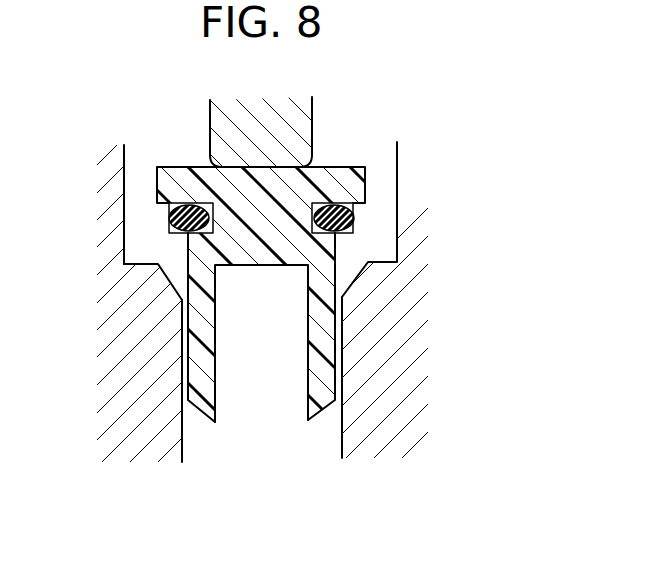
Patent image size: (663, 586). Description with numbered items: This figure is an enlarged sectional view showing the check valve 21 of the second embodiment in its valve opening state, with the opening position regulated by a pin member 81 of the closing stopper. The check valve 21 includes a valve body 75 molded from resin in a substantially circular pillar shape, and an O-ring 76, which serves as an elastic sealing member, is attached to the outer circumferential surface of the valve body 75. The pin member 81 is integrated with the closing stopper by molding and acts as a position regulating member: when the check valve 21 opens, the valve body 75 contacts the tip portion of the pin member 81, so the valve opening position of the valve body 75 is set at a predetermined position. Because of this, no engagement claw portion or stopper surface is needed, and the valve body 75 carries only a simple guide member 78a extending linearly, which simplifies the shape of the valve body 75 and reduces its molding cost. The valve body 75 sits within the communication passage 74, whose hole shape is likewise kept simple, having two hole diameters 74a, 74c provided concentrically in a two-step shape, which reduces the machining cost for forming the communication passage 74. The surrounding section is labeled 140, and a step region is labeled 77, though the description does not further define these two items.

The check valve 21 is at (304, 303).
The communication passage 74 is at (257, 412).
The hole diameter 74a is at (342, 413).
The hole diameter 74c is at (400, 218).
The valve body 75 is at (157, 192).
The O-ring 76 is at (169, 220).
The step portion 77 is at (163, 277).
The guide member 78a is at (203, 402).
The pin member 81 is at (312, 100).
The housing 140 is at (108, 428).